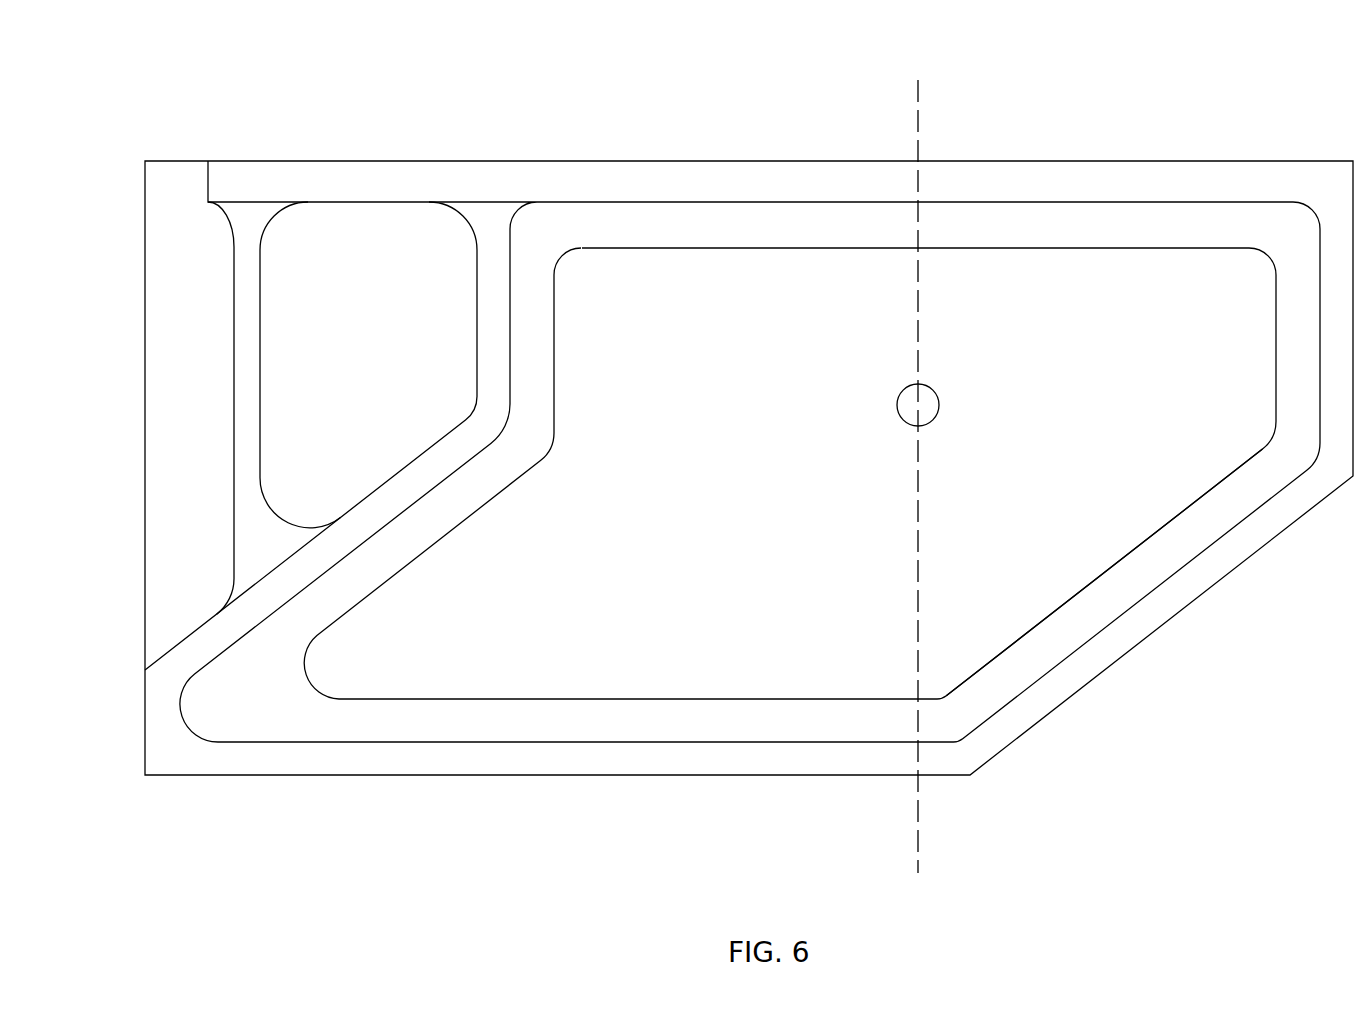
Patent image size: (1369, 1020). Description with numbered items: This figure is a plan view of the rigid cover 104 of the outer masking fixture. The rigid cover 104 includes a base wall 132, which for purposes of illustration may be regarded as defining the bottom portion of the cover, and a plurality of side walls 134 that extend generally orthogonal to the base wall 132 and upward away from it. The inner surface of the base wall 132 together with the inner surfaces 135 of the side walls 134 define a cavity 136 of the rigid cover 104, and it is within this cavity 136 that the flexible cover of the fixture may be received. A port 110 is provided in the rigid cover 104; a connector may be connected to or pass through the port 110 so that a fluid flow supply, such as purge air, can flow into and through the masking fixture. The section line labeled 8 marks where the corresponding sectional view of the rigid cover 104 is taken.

The rigid cover 104 is at (252, 108).
The port 110 is at (928, 409).
The base wall 132 is at (192, 398).
The side walls 134 is at (433, 462).
The inner surfaces 135 is at (420, 502).
The cavity 136 is at (1109, 538).
The section line 8- 8 is at (918, 81).